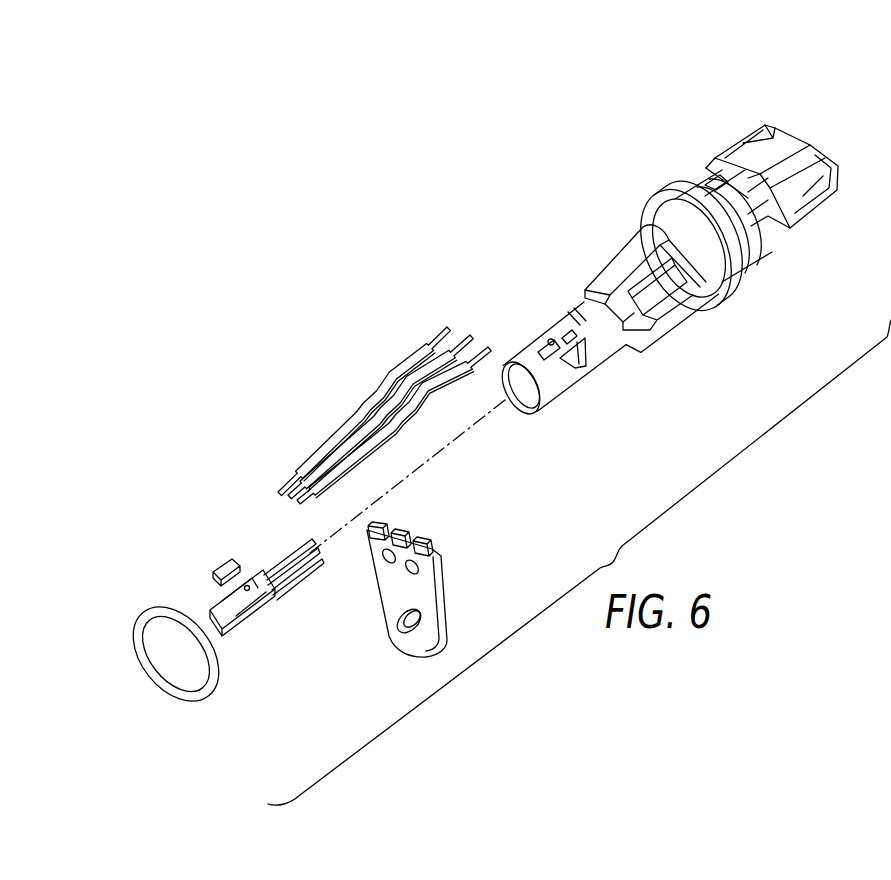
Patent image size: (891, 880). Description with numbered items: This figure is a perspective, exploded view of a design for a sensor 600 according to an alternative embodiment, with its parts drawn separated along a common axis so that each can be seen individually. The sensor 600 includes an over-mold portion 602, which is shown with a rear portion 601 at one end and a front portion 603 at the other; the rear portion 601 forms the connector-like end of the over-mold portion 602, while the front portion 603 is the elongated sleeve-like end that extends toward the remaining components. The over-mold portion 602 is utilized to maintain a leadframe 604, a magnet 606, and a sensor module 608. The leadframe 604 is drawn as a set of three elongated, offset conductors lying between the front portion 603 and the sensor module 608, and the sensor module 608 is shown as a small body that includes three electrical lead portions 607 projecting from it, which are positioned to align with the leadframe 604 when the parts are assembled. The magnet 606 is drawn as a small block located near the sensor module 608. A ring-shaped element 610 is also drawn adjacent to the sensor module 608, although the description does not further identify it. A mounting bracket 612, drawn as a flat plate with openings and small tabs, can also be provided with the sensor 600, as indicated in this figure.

The sensor 600 is at (440, 216).
The rear portion 601 is at (810, 202).
The over-mold portion 602 is at (640, 193).
The front portion 603 is at (598, 353).
The leadframe 604 is at (340, 406).
The magnet 606 is at (219, 548).
The electrical lead portions 607 is at (308, 592).
The sensor module 608 is at (195, 600).
The O-ring 610 is at (190, 716).
The mounting bracket 612 is at (462, 588).